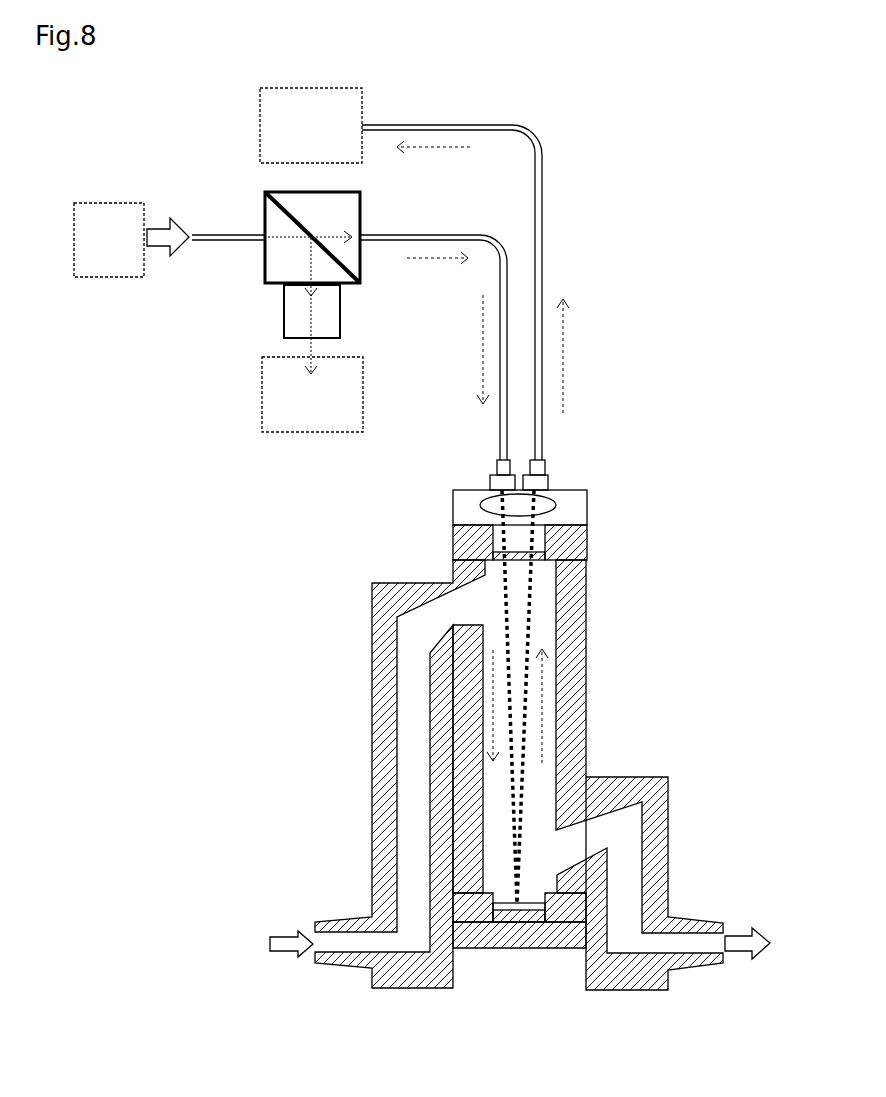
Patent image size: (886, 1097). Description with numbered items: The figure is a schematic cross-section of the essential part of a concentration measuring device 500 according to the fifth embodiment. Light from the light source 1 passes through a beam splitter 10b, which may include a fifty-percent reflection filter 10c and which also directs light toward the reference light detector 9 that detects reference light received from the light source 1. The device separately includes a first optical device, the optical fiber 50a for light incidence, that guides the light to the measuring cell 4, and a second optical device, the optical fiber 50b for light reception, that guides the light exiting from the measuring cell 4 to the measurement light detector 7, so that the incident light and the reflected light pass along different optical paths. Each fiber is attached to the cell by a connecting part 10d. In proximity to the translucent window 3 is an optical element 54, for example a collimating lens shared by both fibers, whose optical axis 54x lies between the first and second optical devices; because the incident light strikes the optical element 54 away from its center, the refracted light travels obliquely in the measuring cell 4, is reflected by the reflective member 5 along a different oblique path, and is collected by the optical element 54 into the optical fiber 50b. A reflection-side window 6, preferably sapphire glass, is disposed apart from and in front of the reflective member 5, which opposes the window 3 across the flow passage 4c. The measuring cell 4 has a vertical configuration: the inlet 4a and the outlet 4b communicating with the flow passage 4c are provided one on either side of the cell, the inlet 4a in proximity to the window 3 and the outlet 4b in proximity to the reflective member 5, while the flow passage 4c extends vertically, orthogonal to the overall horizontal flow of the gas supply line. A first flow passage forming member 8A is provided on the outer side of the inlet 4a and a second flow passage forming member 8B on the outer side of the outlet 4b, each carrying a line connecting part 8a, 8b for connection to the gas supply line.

The light source 1 is at (110, 278).
The measurement light detector 7 is at (260, 122).
The reference light detector 9 is at (300, 433).
The beam splitter 10b is at (265, 205).
The 50% reflection filter 10c is at (358, 268).
The connecting part 10d is at (490, 478).
The optical fiber for light incidence 50a is at (497, 418).
The optical fiber for light reception 50b is at (545, 225).
The concentration measuring device 500 is at (672, 193).
The optical element 54 is at (587, 495).
The optical axis 54x is at (470, 505).
The translucent window 3 is at (590, 548).
The measuring cell 4 is at (590, 700).
The inlet 4a is at (482, 607).
The outlet 4b is at (553, 852).
The flow passage 4c is at (547, 641).
The first flow passage forming member 8A is at (375, 790).
The line connecting part 8a is at (330, 920).
The second flow passage forming member 8B is at (668, 778).
The line connecting part 8b is at (700, 920).
The reflective member 5 is at (527, 927).
The reflection-side window 6 is at (483, 940).